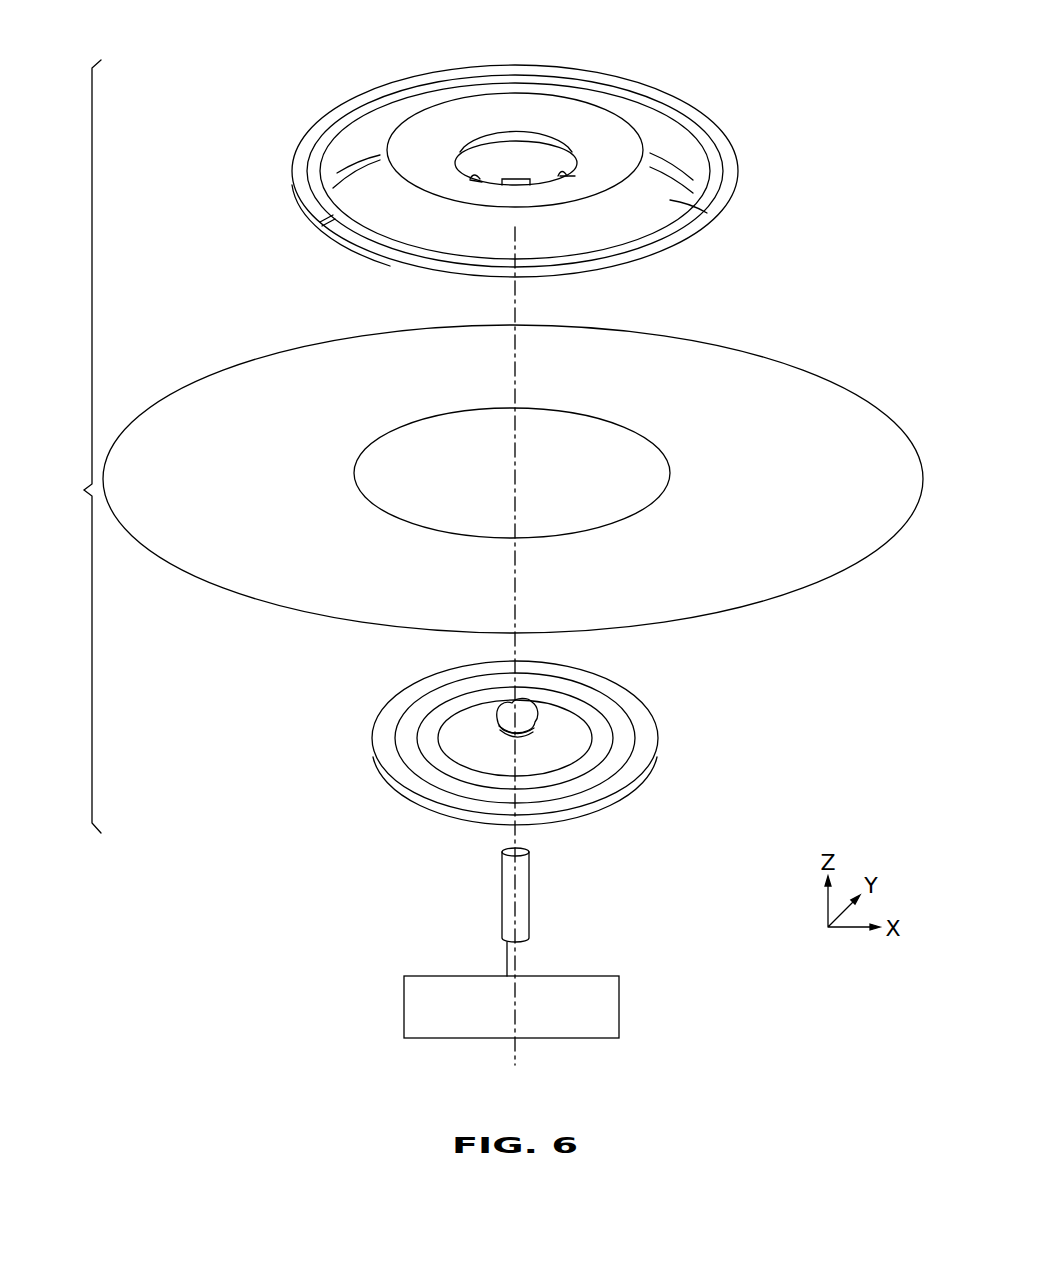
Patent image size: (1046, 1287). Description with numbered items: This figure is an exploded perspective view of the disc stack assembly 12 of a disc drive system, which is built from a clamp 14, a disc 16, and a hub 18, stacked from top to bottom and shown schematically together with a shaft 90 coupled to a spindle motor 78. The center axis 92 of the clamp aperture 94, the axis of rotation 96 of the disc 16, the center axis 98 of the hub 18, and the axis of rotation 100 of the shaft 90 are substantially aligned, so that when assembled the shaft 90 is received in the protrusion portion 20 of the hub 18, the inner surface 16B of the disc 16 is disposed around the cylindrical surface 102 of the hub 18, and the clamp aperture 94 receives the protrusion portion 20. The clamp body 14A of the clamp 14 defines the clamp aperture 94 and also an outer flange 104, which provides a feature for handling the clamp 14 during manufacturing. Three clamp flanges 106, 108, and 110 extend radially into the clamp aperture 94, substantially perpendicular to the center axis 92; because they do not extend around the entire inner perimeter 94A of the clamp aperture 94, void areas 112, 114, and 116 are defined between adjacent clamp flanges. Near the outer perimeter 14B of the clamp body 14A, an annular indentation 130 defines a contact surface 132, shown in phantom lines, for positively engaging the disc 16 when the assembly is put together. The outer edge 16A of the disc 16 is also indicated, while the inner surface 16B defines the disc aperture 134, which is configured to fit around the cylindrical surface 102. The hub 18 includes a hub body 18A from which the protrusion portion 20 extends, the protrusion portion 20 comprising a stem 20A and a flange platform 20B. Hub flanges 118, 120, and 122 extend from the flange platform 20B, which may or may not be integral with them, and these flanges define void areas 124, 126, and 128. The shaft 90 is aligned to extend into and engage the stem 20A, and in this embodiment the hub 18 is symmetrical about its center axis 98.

The disc stack assembly 12 is at (74, 446).
The clamp 14 is at (813, 127).
The clamp body 14A is at (620, 178).
The outer perimeter 14B is at (672, 198).
The disc 16 is at (513, 479).
The outer edge of disc 16A is at (273, 573).
The inner surface 16B is at (357, 466).
The hub 18 is at (703, 720).
The hub body 18A is at (427, 758).
The protrusion portion 20 is at (493, 712).
The stem 20A is at (533, 733).
The flange platform 20B is at (535, 707).
The spindle motor 78 is at (620, 1008).
The shaft 90 is at (529, 882).
The center axis 92 is at (513, 306).
The clamp aperture 94 is at (502, 157).
The inner perimeter 94A is at (532, 124).
The axis of rotation 96 is at (517, 455).
The center axis 98 is at (517, 642).
The axis of rotation 100 is at (517, 920).
The cylindrical surface 102 is at (654, 752).
The outer flange 104 is at (738, 174).
The clamp flange 106 is at (463, 143).
The clamp flange 108 is at (562, 149).
The clamp flange 110 is at (524, 187).
The void area 112 is at (512, 128).
The void area 114 is at (575, 176).
The void area 116 is at (480, 182).
The hub flange 118 is at (495, 704).
The hub flange 120 is at (537, 722).
The hub flange 122 is at (512, 733).
The void area 124 is at (508, 700).
The void area 126 is at (585, 765).
The void area 128 is at (497, 728).
The annular indentation 130 is at (317, 150).
The contact surface 132 is at (330, 222).
The disc aperture 134 is at (423, 503).